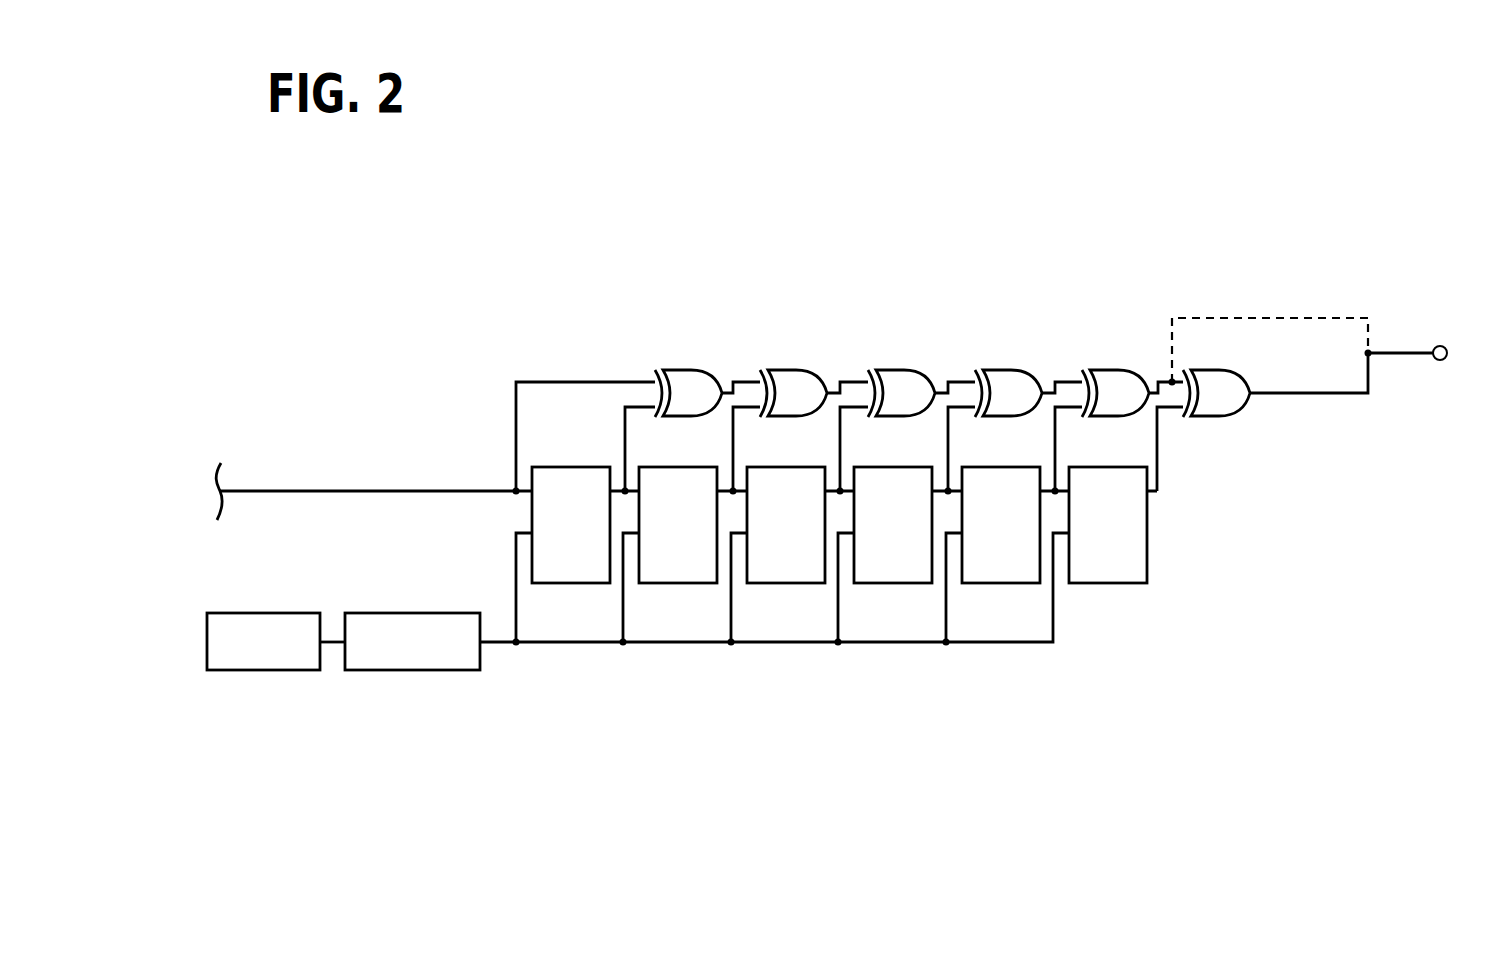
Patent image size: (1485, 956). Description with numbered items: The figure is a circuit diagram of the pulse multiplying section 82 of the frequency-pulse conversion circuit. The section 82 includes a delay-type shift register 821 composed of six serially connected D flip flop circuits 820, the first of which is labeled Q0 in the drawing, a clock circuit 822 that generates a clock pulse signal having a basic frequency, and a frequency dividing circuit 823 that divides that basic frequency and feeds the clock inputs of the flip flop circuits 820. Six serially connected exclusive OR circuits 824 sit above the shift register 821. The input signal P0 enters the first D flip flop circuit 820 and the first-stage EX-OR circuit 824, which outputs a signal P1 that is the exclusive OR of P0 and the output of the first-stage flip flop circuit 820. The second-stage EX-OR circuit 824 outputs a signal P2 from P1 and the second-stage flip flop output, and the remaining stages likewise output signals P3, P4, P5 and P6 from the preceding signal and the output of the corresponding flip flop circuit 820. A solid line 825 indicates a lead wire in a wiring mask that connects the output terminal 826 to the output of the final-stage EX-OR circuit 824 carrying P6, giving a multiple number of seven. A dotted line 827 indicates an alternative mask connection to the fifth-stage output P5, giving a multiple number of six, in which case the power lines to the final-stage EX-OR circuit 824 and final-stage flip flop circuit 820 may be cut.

The pulse multiplying section 82 is at (838, 168).
The D flip flop circuit 820 is at (898, 585).
The delay-type shift register 821 is at (1020, 645).
The clock circuit 822 is at (278, 662).
The frequency dividing circuit 823 is at (460, 662).
The exclusive OR circuit 824 is at (898, 370).
The solid line 825 is at (1303, 396).
The output terminal 826 is at (1440, 362).
The dotted line 827 is at (1322, 318).
The signal P0 is at (374, 488).
The signal P1 is at (742, 380).
The signal P2 is at (848, 378).
The signal P3 is at (960, 378).
The signal P4 is at (1066, 378).
The signal P5 is at (1240, 318).
The signal P6 is at (1330, 393).
The flip-flop Q0 is at (571, 525).